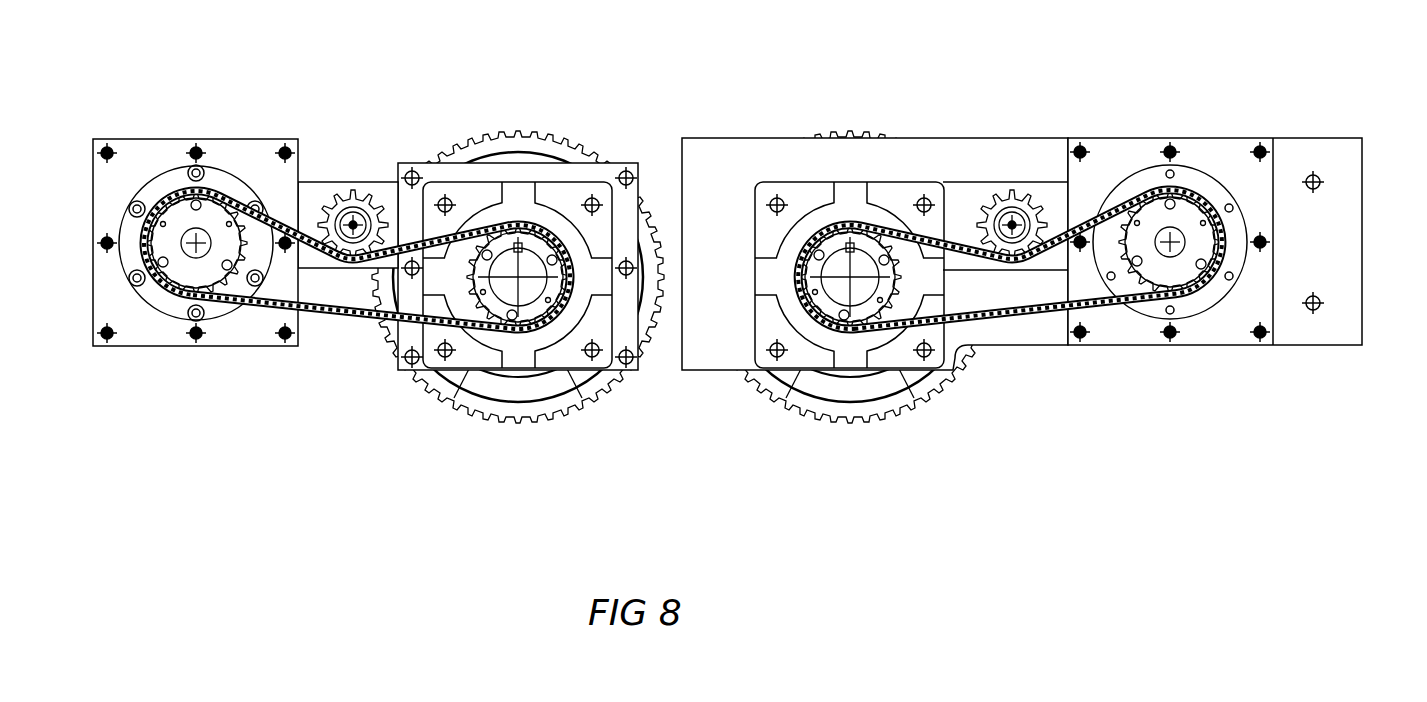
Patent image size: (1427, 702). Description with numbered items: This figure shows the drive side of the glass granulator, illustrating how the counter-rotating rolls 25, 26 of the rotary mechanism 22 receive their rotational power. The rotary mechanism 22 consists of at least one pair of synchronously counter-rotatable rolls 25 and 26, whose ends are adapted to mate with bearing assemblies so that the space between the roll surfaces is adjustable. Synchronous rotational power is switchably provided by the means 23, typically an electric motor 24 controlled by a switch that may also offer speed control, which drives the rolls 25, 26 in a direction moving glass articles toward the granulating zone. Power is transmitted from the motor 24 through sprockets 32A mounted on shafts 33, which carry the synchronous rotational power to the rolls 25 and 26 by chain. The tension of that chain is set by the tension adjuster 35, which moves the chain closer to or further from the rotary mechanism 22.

The rotary mechanism 22 is at (342, 327).
The means for switchably providing synchronous rotational power 23 is at (122, 346).
The electric motor 24 is at (227, 320).
The counter-rotatable roll 25 is at (540, 133).
The counter-rotatable roll 26 is at (826, 138).
The sprocket 32A is at (186, 187).
The shaft 33 is at (185, 256).
The tension adjuster 35 is at (353, 190).